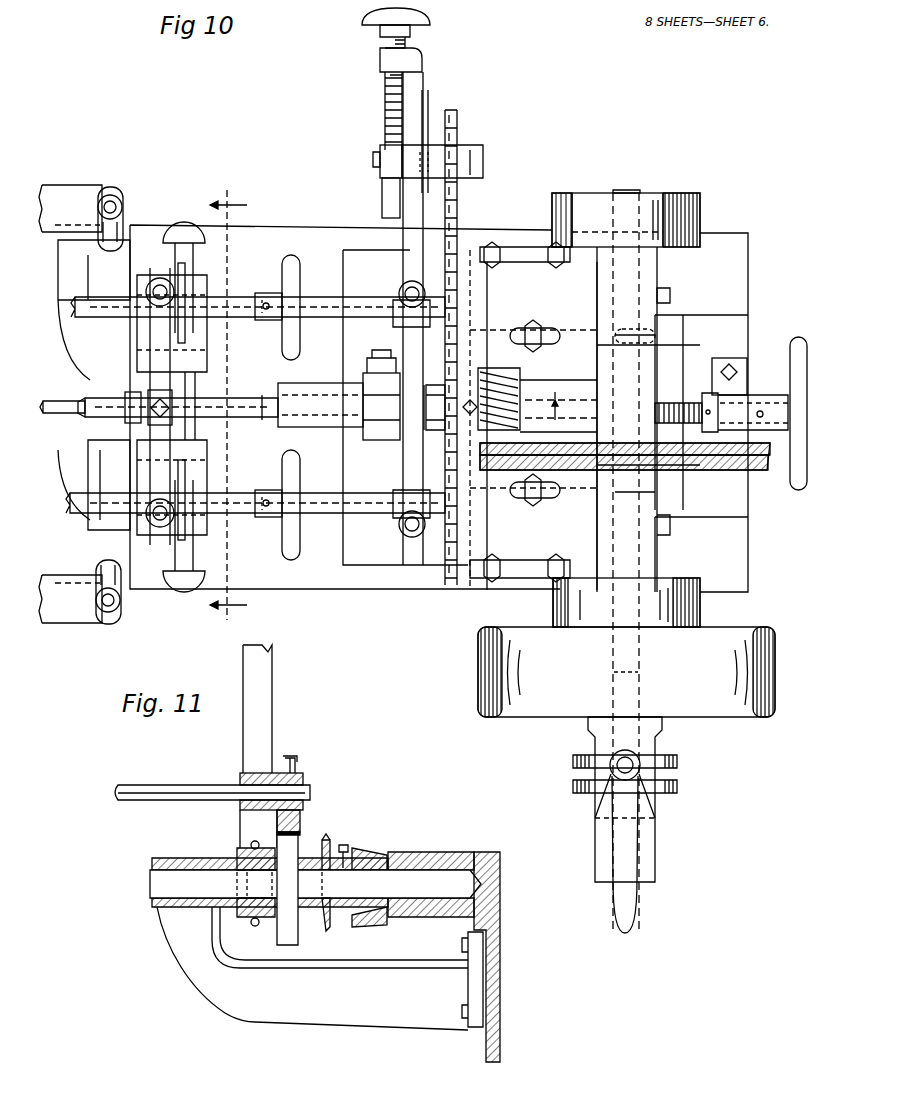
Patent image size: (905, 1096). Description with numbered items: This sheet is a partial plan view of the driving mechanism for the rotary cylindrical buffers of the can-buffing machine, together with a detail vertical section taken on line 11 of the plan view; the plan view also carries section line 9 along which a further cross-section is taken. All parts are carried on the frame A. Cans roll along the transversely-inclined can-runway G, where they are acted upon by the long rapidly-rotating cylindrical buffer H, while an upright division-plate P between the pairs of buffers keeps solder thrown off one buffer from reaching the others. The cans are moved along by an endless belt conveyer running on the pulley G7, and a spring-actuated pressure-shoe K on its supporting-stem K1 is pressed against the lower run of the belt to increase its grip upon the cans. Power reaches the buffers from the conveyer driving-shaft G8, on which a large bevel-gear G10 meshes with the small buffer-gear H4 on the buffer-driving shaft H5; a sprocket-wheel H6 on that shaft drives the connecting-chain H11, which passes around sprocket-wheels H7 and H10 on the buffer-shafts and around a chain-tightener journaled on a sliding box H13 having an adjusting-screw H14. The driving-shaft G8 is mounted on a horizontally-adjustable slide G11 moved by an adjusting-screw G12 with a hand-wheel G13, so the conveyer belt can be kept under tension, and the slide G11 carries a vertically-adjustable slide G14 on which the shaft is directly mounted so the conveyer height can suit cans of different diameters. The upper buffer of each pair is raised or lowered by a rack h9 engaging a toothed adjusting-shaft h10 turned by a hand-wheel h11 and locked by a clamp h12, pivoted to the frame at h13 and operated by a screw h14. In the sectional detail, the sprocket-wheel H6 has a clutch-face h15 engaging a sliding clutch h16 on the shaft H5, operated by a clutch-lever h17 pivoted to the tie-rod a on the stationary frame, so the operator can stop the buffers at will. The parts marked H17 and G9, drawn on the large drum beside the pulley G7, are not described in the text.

In FIG. 10, the frame A is at (380, 590).
In FIG. 11, the frame A is at (275, 915).
In FIG. 10, the pressure-shoe K is at (70, 404).
In FIG. 10, the supporting-stem K1 is at (115, 196).
In FIG. 10, the division-plate P is at (55, 413).
In FIG. 10, the tie-rod a is at (100, 417).
In FIG. 11, the tie-rod a is at (310, 792).
In FIG. 10, the section line 9 9 is at (228, 404).
In FIG. 10, the section line 11 11 is at (422, 405).
In FIG. 10, the rack h9 is at (160, 292).
In FIG. 10, the toothed adjusting-shaft h10 is at (82, 312).
In FIG. 10, the hand-wheel h11 is at (288, 255).
In FIG. 10, the clamp h12 is at (185, 540).
In FIG. 10, the clamp pivot h13 is at (190, 380).
In FIG. 10, the screw h14 is at (184, 228).
In FIG. 10, the clutch-face h15 is at (428, 428).
In FIG. 11, the clutch-face h15 is at (300, 912).
In FIG. 11, the sliding clutch h16 is at (288, 915).
In FIG. 10, the clutch-lever h17 is at (370, 373).
In FIG. 11, the clutch-lever h17 is at (272, 735).
In FIG. 10, the rotary cylindrical buffer H is at (262, 383).
In FIG. 11, the rotary cylindrical buffer H is at (370, 855).
In FIG. 10, the buffer-gear H4 is at (485, 368).
In FIG. 11, the buffer-driving shaft H5 is at (165, 884).
In FIG. 10, the sprocket-wheel H6 is at (430, 412).
In FIG. 11, the sprocket-wheel H6 is at (326, 838).
In FIG. 10, the sprocket-wheel H7 is at (457, 530).
In FIG. 10, the sprocket-wheel H10 is at (457, 290).
In FIG. 10, the connecting-chain H11 is at (457, 200).
In FIG. 10, the sliding box H13 is at (380, 160).
In FIG. 10, the adjusting-screw H14 is at (362, 22).
In FIG. 10, the cross bar H17 is at (450, 160).
In FIG. 10, the can-runway G is at (633, 561).
In FIG. 10, the pulley G7 is at (680, 193).
In FIG. 10, the driving-shaft G8 is at (635, 190).
In FIG. 10, the large drum G9 is at (626, 672).
In FIG. 10, the bevel-gear G10 is at (758, 468).
In FIG. 10, the adjustable slide G11 is at (570, 320).
In FIG. 10, the adjusting-screw G12 is at (686, 403).
In FIG. 10, the hand-wheel G13 is at (799, 337).
In FIG. 10, the vertically-adjustable slide G14 is at (662, 555).
In FIG. 11, the vertically-adjustable slide G14 is at (500, 922).